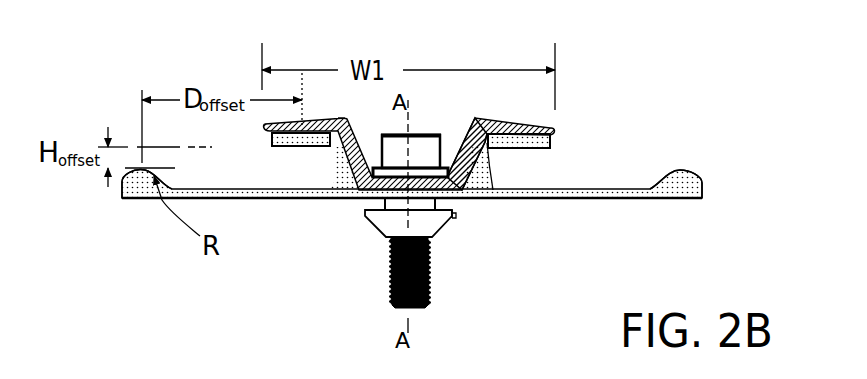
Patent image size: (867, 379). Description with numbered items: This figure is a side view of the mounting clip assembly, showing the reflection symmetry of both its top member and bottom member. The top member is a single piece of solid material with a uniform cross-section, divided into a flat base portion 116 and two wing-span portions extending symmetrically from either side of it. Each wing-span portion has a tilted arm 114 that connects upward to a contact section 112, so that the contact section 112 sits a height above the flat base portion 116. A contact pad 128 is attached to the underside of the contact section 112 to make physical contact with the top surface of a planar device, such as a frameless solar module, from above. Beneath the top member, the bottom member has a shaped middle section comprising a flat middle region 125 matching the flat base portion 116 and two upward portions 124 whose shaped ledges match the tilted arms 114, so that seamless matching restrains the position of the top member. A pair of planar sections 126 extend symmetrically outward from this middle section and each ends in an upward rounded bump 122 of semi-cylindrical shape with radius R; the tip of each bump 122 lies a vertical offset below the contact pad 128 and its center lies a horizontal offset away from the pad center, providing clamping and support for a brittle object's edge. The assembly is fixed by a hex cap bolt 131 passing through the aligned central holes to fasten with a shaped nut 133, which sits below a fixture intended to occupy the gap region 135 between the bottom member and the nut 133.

The contact section 112 is at (497, 120).
The tilted arm 114 is at (466, 133).
The flat base portion 116 is at (377, 203).
The upward rounded bump 122 is at (122, 178).
The upward portion 124 is at (336, 163).
The flat middle region 125 is at (442, 198).
The planar section 126 is at (587, 198).
The contact pad 128 is at (268, 138).
The hex cap bolt 131 is at (418, 134).
The shaped nut 133 is at (433, 236).
The gap region 135 is at (372, 211).